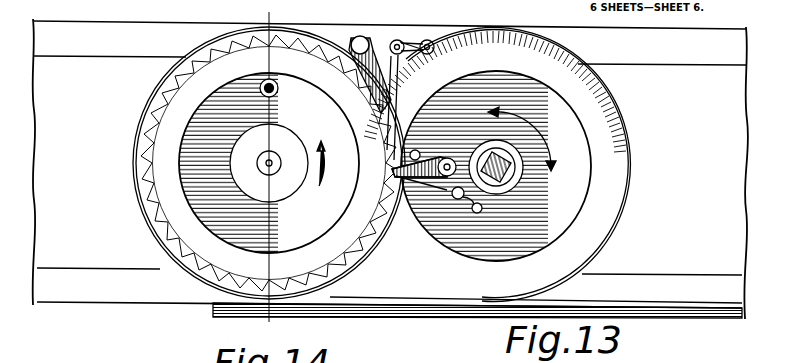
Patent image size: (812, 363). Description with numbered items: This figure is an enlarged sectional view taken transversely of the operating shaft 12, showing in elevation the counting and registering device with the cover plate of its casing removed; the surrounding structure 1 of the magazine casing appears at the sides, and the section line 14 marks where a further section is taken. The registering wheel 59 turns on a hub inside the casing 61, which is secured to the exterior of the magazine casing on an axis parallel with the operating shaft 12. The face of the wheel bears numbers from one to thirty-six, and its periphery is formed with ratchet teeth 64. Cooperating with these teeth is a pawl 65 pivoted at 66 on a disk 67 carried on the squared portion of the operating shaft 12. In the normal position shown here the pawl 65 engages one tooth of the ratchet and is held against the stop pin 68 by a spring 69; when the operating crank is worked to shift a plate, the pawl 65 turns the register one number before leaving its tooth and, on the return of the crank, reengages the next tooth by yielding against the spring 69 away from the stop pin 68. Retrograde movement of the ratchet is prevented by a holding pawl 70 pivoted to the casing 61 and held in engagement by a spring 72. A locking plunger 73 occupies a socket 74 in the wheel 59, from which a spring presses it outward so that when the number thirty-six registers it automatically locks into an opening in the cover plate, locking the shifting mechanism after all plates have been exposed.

The casing 1 is at (390, 169).
The operating shaft 12 is at (512, 176).
The section line 14 is at (300, 15).
The registering wheel 59 is at (147, 188).
The casing 61 is at (628, 142).
The ratchet teeth 64 is at (137, 129).
The pawl 65 is at (420, 181).
The pivot 66 is at (432, 160).
The disk 67 is at (496, 166).
The stop pin 68 is at (414, 150).
The spring 69 is at (453, 198).
The holding pawl 70 is at (386, 62).
The spring 72 is at (396, 72).
The locking plunger 73 is at (278, 93).
The socket 74 is at (361, 36).